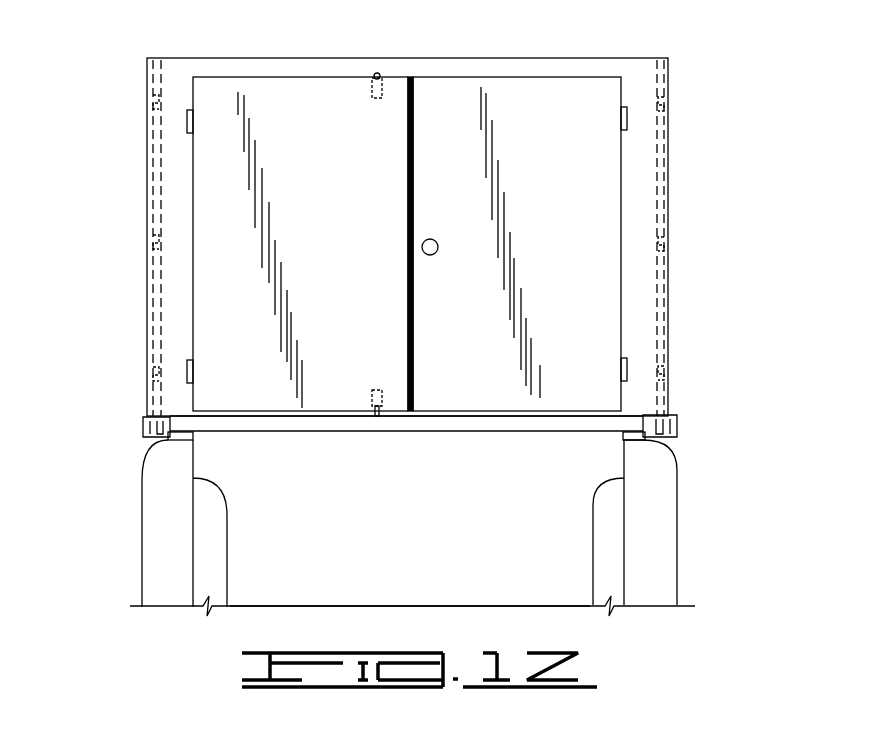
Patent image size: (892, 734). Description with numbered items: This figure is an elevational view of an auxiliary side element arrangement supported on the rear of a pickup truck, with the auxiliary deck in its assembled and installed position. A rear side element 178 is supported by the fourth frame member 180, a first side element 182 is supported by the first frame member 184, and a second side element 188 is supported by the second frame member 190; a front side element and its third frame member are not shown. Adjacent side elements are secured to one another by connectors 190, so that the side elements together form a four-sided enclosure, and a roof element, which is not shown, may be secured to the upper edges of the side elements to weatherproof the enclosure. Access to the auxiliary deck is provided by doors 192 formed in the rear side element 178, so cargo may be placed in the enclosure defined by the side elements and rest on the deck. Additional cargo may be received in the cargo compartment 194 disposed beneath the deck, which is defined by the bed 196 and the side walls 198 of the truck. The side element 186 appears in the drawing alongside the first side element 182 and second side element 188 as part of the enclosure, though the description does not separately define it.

The rear side element 178 is at (605, 58).
The fourth frame member 180 is at (450, 420).
The first side element 182 is at (665, 188).
The first frame member 184 is at (688, 425).
The left side wall 186 is at (148, 172).
The second side element 188 is at (135, 430).
The connectors 190 is at (148, 110).
The doors 192 is at (293, 88).
The cargo compartment 194 is at (487, 575).
The bed 196 is at (350, 600).
The side walls 198 is at (142, 520).